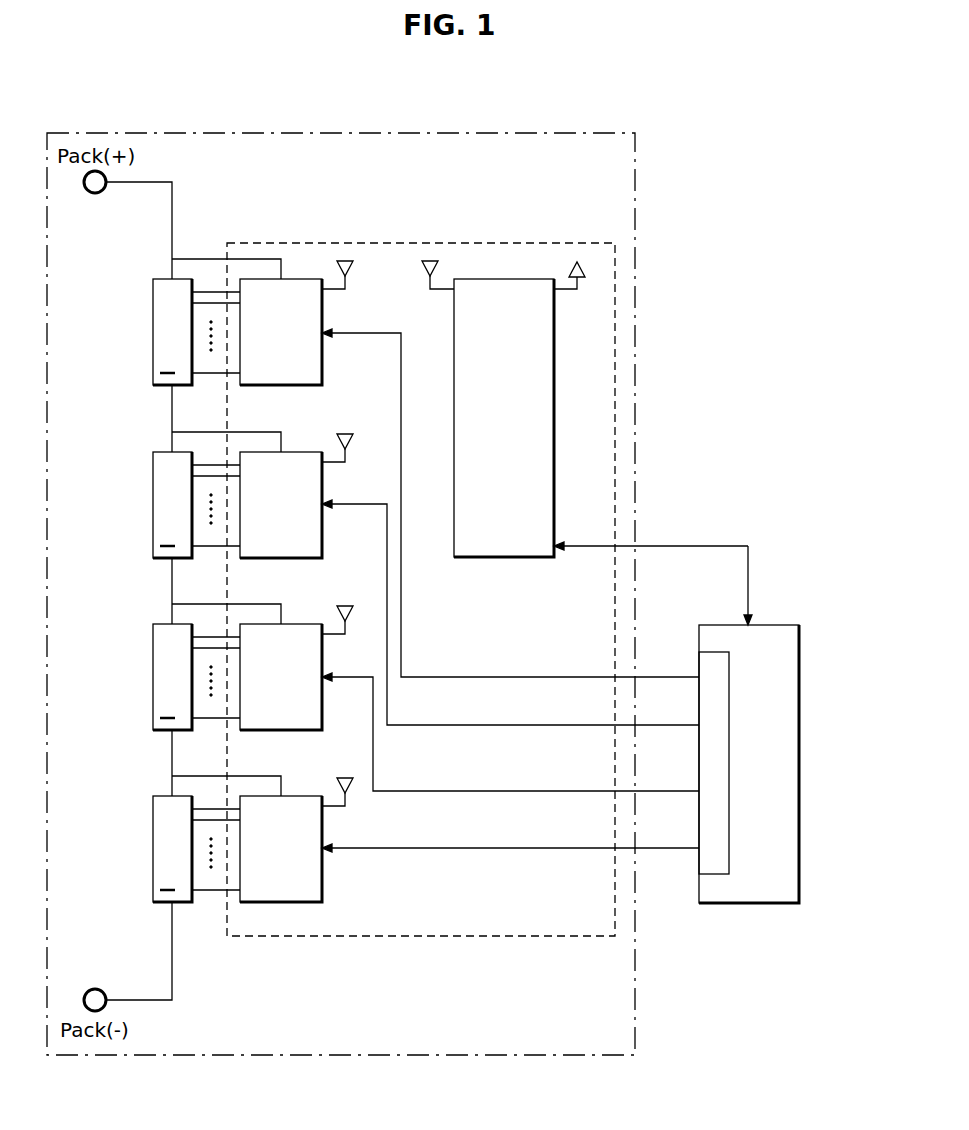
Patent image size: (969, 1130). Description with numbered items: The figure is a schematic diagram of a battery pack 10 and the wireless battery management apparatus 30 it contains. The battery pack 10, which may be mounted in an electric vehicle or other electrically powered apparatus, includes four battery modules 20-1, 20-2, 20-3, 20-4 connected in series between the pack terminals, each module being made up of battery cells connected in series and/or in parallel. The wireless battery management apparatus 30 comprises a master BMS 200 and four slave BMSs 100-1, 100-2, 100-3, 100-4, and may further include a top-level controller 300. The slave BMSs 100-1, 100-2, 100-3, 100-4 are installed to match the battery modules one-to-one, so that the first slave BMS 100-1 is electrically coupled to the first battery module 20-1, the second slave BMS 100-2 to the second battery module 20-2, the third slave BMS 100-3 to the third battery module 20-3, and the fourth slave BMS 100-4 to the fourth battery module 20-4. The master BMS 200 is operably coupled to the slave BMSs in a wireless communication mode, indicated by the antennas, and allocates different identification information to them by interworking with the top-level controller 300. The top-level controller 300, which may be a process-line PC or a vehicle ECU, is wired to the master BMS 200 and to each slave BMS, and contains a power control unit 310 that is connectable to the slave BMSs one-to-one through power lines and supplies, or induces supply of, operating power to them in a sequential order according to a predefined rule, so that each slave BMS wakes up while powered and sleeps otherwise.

The battery pack 10 is at (571, 133).
The wireless battery management apparatus 30 is at (571, 243).
The first battery module 20-1 is at (153, 333).
The second battery module 20-2 is at (153, 506).
The third battery module 20-3 is at (153, 678).
The fourth battery module 20-4 is at (153, 850).
The first slave BMS 100-1 is at (307, 387).
The second slave BMS 100-2 is at (307, 560).
The third slave BMS 100-3 is at (307, 732).
The fourth slave BMS 100-4 is at (307, 904).
The master BMS 200 is at (555, 419).
The top-level controller 300 is at (799, 866).
The power control unit 310 is at (699, 867).